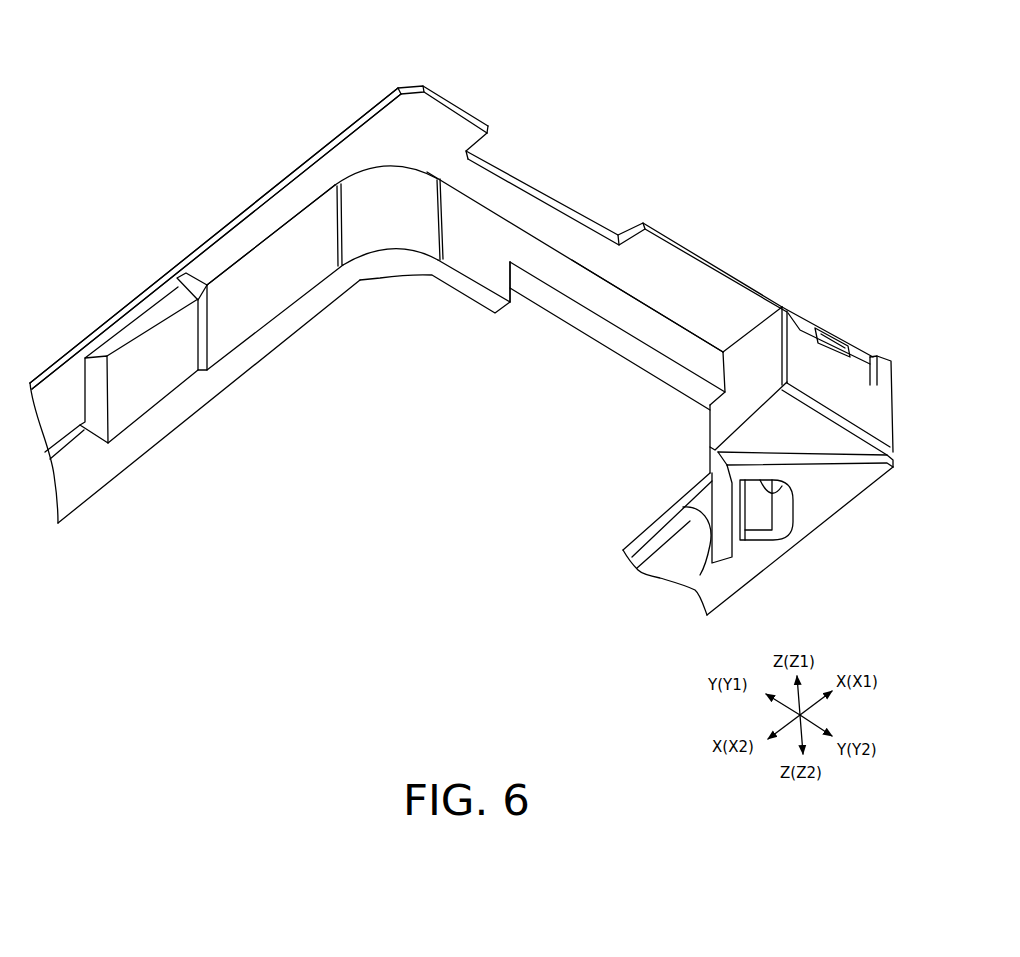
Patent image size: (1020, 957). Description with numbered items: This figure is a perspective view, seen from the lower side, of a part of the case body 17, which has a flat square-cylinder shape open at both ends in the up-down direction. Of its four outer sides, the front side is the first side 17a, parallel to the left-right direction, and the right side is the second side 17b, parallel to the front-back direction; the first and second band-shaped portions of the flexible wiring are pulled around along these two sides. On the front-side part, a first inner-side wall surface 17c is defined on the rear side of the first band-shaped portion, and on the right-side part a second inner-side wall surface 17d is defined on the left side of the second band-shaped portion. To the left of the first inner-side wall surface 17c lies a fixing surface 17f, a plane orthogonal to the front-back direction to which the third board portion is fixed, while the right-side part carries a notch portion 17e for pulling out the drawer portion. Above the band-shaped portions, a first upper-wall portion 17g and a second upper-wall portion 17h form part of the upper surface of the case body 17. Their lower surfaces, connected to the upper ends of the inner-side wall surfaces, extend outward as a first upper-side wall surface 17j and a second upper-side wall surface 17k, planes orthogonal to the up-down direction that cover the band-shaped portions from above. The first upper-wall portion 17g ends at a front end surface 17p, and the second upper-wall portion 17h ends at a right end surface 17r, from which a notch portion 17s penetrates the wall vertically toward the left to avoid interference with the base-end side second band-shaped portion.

The case body 17 is at (412, 85).
The first side 17a is at (116, 279).
The second side 17b is at (751, 217).
The first inner-side wall surface 17c is at (318, 269).
The second inner-side wall surface 17d is at (492, 254).
The notch portion 17e is at (618, 344).
The fixing surface 17f is at (160, 379).
The first upper-wall portion 17g is at (238, 212).
The second upper-wall portion 17h is at (448, 98).
The first upper-side wall surface 17j is at (236, 256).
The second upper-side wall surface 17k is at (700, 302).
The front end surface 17p is at (311, 154).
The right end surface 17r is at (480, 117).
The notch portion 17s is at (627, 228).